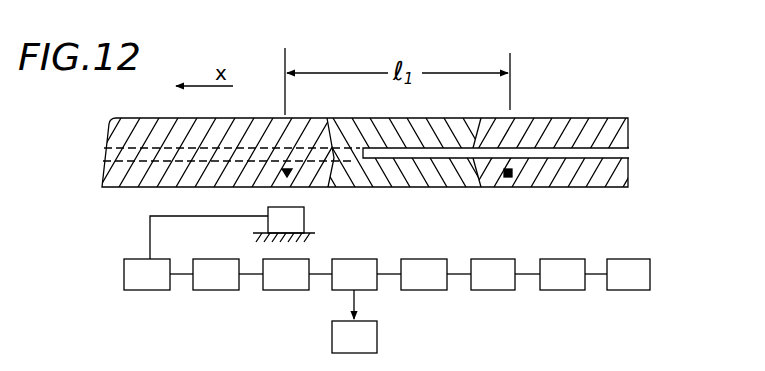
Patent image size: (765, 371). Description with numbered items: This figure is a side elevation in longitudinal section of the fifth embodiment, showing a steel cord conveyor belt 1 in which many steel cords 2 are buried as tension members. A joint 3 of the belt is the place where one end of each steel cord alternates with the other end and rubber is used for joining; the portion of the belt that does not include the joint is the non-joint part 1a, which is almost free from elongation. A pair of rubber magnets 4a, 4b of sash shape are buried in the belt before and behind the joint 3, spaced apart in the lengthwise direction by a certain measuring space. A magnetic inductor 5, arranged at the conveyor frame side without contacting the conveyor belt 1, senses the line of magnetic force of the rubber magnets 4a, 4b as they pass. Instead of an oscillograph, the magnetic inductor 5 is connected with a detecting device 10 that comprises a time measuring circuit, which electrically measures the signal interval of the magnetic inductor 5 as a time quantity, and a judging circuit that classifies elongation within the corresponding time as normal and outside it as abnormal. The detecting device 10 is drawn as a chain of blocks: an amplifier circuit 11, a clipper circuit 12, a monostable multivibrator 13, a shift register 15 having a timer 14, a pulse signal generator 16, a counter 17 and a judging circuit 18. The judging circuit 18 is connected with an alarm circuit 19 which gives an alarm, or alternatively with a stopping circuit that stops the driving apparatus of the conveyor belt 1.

The steel cord conveyor belt 1 is at (143, 94).
The non-joint part 1a is at (204, 131).
The steel cord 2 is at (542, 153).
The joint 3 is at (347, 134).
The rubber magnet 4a is at (289, 175).
The rubber magnet 4b is at (508, 177).
The magnetic inductor 5 is at (304, 218).
The detecting device 10 is at (248, 294).
The amplifier circuit 11 is at (147, 274).
The clipper circuit 12 is at (216, 274).
The monostable multivibrator 13 is at (286, 274).
The timer 14 is at (354, 321).
The shift register 15 is at (354, 274).
The pulse signal generator 16 is at (424, 274).
The counter 17 is at (493, 274).
The judging circuit 18 is at (562, 274).
The alarm circuit 19 is at (628, 274).